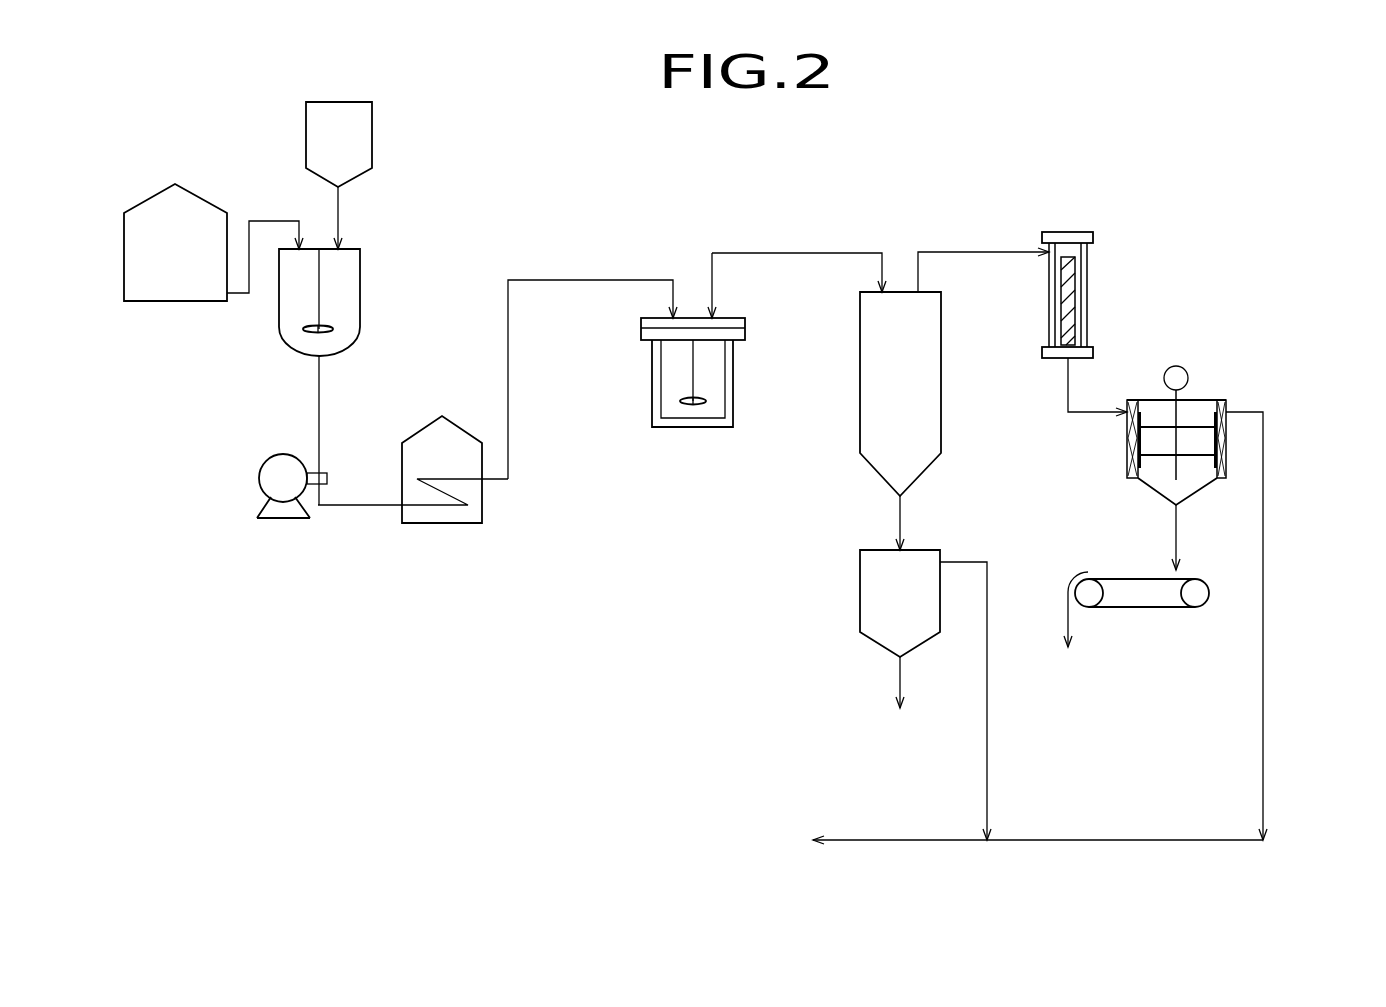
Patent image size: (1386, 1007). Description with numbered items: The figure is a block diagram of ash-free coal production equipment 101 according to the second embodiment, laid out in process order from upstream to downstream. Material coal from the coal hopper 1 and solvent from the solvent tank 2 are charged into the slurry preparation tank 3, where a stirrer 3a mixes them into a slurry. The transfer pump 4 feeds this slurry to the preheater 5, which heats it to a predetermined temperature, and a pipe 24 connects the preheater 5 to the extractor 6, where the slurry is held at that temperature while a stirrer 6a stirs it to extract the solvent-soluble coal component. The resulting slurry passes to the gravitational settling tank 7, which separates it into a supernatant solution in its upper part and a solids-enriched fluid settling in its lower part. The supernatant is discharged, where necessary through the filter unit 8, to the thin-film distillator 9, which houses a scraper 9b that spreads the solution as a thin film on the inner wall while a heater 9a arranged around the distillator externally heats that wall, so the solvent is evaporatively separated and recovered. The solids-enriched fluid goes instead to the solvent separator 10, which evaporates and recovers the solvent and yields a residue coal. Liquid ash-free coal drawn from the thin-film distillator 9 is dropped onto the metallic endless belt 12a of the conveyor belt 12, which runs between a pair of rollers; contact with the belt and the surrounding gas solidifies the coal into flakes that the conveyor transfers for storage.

The coal hopper 1 is at (372, 102).
The solvent tank 2 is at (200, 196).
The slurry preparation tank 3 is at (360, 249).
The stirrer 3a is at (321, 286).
The transfer pump 4 is at (268, 458).
The preheater 5 is at (430, 423).
The pipe 24 is at (583, 280).
The extractor 6 is at (652, 383).
The stirrer 6a is at (695, 376).
The gravitational settling tank 7 is at (860, 372).
The filter unit 8 is at (1093, 232).
The thin-film distillator 9 is at (1203, 400).
The heater 9a is at (1127, 462).
The scraper 9b is at (1176, 447).
The solvent separator 10 is at (945, 550).
The conveyor belt 12 is at (1214, 575).
The metallic endless belt 12a is at (1123, 578).
The ash-free coal production equipment 101 is at (1268, 193).